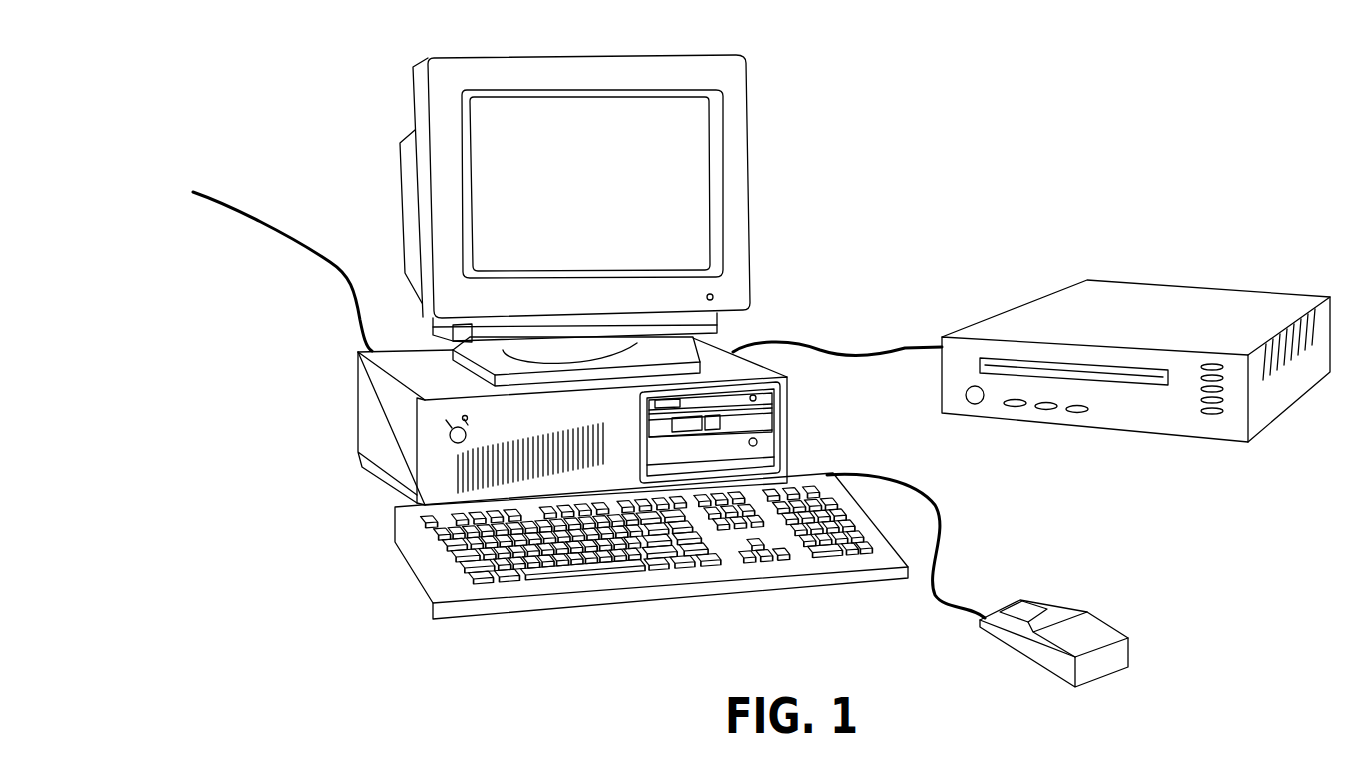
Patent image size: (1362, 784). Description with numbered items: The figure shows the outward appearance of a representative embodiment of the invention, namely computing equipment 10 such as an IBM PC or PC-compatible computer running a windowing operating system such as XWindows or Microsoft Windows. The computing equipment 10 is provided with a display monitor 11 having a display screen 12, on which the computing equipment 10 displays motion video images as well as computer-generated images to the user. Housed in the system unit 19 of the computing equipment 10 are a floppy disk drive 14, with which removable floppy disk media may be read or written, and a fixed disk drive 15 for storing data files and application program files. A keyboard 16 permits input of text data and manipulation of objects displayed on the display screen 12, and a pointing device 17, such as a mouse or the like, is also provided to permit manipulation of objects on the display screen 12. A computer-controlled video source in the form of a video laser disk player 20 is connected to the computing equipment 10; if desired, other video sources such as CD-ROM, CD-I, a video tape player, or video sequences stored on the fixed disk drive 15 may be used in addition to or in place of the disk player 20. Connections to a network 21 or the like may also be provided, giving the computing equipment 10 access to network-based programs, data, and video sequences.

The computing equipment 10 is at (865, 135).
The display monitor 11 is at (618, 55).
The display screen 12 is at (667, 212).
The floppy disk drive 14 is at (743, 422).
The fixed disk drive 15 is at (760, 448).
The keyboard 16 is at (512, 585).
The pointing device 17 is at (1093, 677).
The system unit 19 is at (457, 478).
The video laser disk player 20 is at (1033, 300).
The network 21 is at (318, 250).